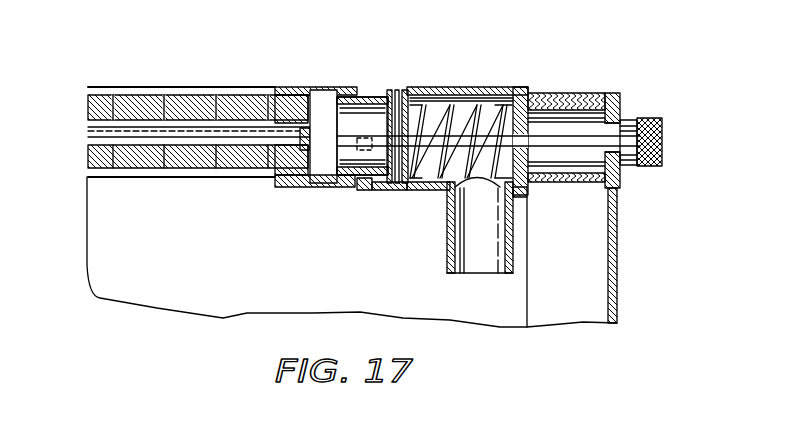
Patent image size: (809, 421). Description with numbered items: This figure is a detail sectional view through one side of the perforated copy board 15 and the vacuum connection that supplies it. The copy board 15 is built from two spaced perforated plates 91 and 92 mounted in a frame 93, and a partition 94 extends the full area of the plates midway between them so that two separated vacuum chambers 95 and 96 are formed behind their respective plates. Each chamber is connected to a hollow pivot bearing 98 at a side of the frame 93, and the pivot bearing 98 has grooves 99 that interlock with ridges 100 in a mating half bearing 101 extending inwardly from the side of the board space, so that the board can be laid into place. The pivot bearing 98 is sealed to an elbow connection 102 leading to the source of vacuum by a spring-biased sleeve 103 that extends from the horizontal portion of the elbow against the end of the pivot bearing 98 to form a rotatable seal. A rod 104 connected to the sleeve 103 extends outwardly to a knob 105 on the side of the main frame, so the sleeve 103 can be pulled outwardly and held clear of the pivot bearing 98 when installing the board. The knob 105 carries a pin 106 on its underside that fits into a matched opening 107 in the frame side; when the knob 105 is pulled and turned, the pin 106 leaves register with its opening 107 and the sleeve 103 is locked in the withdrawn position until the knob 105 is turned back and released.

The copy board 15 is at (386, 179).
The perforated plate 91 is at (173, 97).
The perforated plate 92 is at (177, 170).
The frame 93 is at (293, 187).
The partition 94 is at (153, 133).
The vacuum chamber 95 is at (113, 125).
The vacuum chamber 96 is at (80, 137).
The hollow pivot bearing 98 is at (310, 63).
The groove 99 is at (370, 62).
The ridge 100 is at (360, 190).
The half bearing 101 is at (402, 192).
The elbow connection 102 is at (447, 235).
The spring-biased sleeve 103 is at (457, 82).
The rod 104 is at (552, 140).
The knob 105 is at (662, 142).
The pin 106 is at (630, 125).
The opening 107 is at (610, 132).